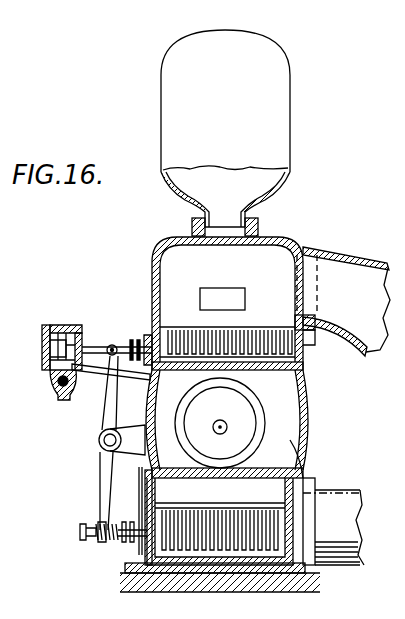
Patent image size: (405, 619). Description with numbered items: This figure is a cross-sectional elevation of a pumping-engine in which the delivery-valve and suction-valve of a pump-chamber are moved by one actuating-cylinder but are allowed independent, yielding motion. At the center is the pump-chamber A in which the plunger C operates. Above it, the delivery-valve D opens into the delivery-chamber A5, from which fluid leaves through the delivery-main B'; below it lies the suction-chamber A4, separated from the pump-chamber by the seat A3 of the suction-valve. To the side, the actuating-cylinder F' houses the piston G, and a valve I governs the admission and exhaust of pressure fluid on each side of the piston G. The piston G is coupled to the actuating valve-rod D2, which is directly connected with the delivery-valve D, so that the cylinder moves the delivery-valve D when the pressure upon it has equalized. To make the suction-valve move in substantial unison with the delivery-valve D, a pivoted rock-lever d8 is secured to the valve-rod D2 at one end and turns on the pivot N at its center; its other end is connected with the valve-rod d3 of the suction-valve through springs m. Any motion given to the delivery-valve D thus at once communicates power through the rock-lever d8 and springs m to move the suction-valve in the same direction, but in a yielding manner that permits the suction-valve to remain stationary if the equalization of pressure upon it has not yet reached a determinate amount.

The delivery-chamber A5 is at (227, 303).
The delivery-valve D is at (250, 342).
The delivery-main B' is at (342, 301).
The valve casing F' is at (62, 337).
The piston G is at (50, 345).
The valve I is at (54, 386).
The actuating valve-rod D2 is at (112, 342).
The pivot N is at (98, 442).
The pump-chamber A is at (227, 424).
The plunger C is at (211, 423).
The suction-chamber A4 is at (220, 531).
The seat of the suction-valve A3 is at (238, 535).
The pivoted rock-lever d8 is at (105, 495).
The valve-rod of the suction-valve d3 is at (80, 532).
The spring m is at (124, 542).